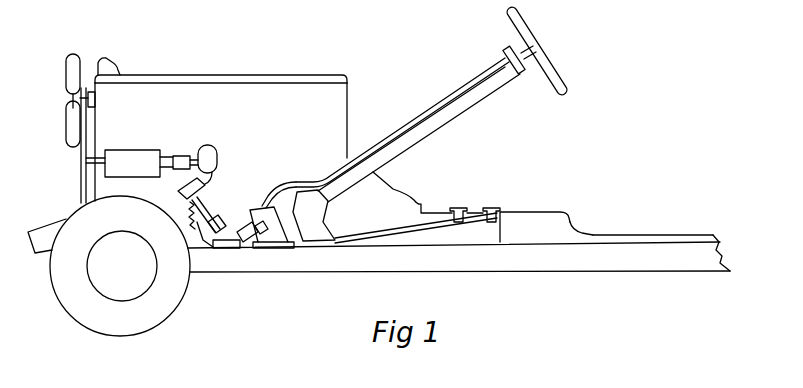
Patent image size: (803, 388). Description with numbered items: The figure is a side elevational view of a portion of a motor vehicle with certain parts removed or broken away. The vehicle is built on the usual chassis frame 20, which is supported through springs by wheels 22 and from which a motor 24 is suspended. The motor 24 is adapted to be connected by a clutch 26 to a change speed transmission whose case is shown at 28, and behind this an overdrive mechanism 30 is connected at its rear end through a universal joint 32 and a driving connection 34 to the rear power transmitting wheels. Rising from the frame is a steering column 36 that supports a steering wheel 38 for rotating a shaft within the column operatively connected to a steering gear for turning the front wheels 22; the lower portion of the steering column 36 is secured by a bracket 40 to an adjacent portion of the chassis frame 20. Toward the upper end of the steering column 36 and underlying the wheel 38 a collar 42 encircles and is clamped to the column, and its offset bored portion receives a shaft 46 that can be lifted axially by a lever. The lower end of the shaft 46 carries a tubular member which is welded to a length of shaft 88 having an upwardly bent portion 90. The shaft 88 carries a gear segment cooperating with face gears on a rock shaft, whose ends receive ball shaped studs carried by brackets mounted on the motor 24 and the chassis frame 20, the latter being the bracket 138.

The chassis frame 20 is at (532, 262).
The wheels 22 is at (158, 316).
The motor 24 is at (348, 107).
The clutch 26 is at (402, 191).
The transmission case 28 is at (450, 207).
The overdrive mechanism 30 is at (522, 222).
The universal joint 32 is at (585, 226).
The driving connection 34 is at (647, 238).
The steering column 36 is at (456, 117).
The steering wheel 38 is at (559, 72).
The bracket 40 is at (297, 207).
The collar 42 is at (522, 74).
The shaft 46 is at (480, 70).
The shaft 88 is at (315, 184).
The upwardly bent portion 90 is at (267, 200).
The bracket 138 is at (273, 248).